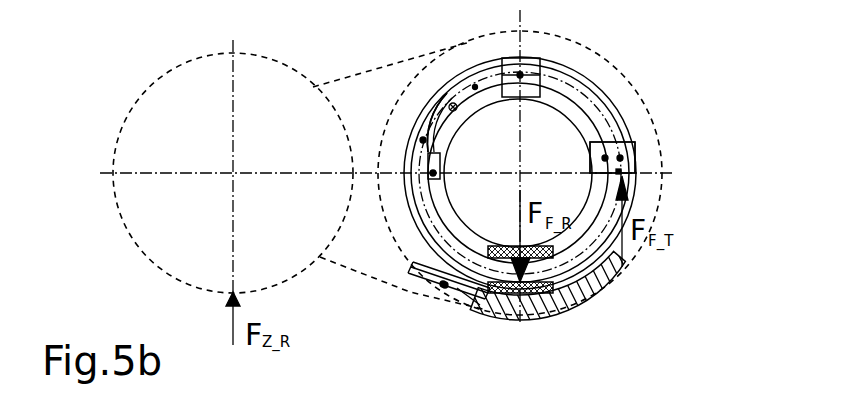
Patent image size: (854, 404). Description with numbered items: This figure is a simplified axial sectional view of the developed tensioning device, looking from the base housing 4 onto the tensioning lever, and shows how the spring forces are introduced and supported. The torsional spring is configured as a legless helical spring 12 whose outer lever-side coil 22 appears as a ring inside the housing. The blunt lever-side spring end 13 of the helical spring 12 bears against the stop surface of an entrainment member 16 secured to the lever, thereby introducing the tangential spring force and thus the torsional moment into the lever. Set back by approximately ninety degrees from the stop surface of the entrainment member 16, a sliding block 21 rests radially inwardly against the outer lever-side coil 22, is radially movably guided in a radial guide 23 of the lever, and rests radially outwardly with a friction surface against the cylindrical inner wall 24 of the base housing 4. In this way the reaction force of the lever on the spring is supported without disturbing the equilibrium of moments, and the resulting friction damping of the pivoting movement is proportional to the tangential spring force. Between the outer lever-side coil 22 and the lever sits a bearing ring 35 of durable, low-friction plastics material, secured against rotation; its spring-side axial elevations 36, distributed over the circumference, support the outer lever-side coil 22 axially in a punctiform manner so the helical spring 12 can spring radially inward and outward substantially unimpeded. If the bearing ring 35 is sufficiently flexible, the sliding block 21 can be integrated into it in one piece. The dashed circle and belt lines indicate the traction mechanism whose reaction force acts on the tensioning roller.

The base housing 4 is at (437, 290).
The helical spring 12 is at (423, 139).
The outer lever-side coil 22 is at (423, 139).
The lever-side spring end 13 is at (620, 171).
The entrainment member 16 is at (621, 157).
The sliding block 21 is at (467, 308).
The radial guide 23 is at (560, 300).
The cylindrical inner wall 24 is at (444, 283).
The bearing ring 35 is at (475, 86).
The axial elevations 36 is at (434, 173).